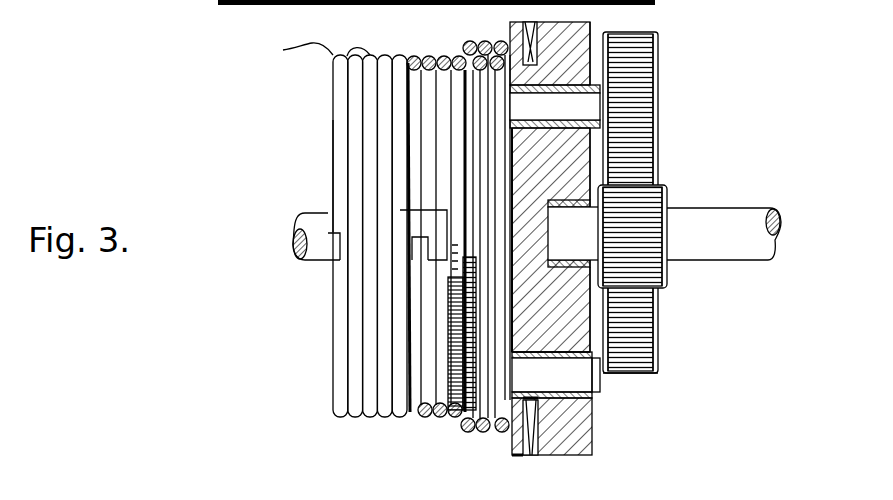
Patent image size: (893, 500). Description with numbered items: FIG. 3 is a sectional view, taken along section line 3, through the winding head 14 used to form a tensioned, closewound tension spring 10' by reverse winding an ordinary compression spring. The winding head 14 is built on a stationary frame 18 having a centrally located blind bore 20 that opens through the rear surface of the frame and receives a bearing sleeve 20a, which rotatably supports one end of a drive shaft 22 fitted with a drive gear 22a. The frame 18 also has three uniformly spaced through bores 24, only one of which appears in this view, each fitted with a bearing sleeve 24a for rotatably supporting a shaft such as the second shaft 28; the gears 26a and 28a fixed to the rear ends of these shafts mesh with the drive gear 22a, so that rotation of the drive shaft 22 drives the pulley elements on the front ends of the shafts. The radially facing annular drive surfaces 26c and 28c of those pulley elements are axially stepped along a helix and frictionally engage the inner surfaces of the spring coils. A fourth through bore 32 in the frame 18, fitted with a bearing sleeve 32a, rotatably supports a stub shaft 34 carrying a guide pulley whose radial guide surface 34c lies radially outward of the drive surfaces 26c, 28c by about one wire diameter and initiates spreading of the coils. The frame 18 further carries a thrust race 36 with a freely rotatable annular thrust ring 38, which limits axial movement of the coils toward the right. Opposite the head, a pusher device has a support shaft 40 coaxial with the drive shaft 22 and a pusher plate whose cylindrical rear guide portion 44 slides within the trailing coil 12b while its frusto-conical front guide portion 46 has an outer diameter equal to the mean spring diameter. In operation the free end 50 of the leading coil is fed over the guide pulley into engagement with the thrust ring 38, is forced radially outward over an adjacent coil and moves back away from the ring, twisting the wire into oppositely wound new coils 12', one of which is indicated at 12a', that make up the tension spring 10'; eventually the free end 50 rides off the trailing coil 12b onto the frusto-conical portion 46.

The section line 3 is at (397, 32).
The tension spring 10' is at (264, 93).
The new coils 12' is at (331, 227).
The spring input end coils 12a' is at (278, 174).
The trailing coil 12b is at (498, 386).
The winding head 14 is at (720, 95).
The stationary frame 18 is at (580, 440).
The blind bore 20 is at (576, 262).
The bearing sleeve 20a is at (572, 203).
The drive shaft 22 is at (738, 212).
The drive gear 22a is at (667, 193).
The through bores 24 is at (562, 90).
The bearing sleeves 24a is at (542, 138).
The gear 26a is at (658, 365).
The drive surface 26c is at (546, 222).
The second shaft 28 is at (594, 120).
The gear 28a is at (658, 46).
The drive surface 28c is at (497, 110).
The fourth through bore 32 is at (568, 332).
The bearing sleeve 32a is at (565, 402).
The stub shaft 34 is at (580, 379).
The radial guide surface 34c is at (511, 334).
The thrust race 36 is at (538, 461).
The annular thrust ring 38 is at (512, 455).
The support shaft 40 is at (293, 252).
The rear guide portion 44 is at (470, 186).
The front guide portion 46 is at (455, 165).
The free end 50 is at (330, 250).